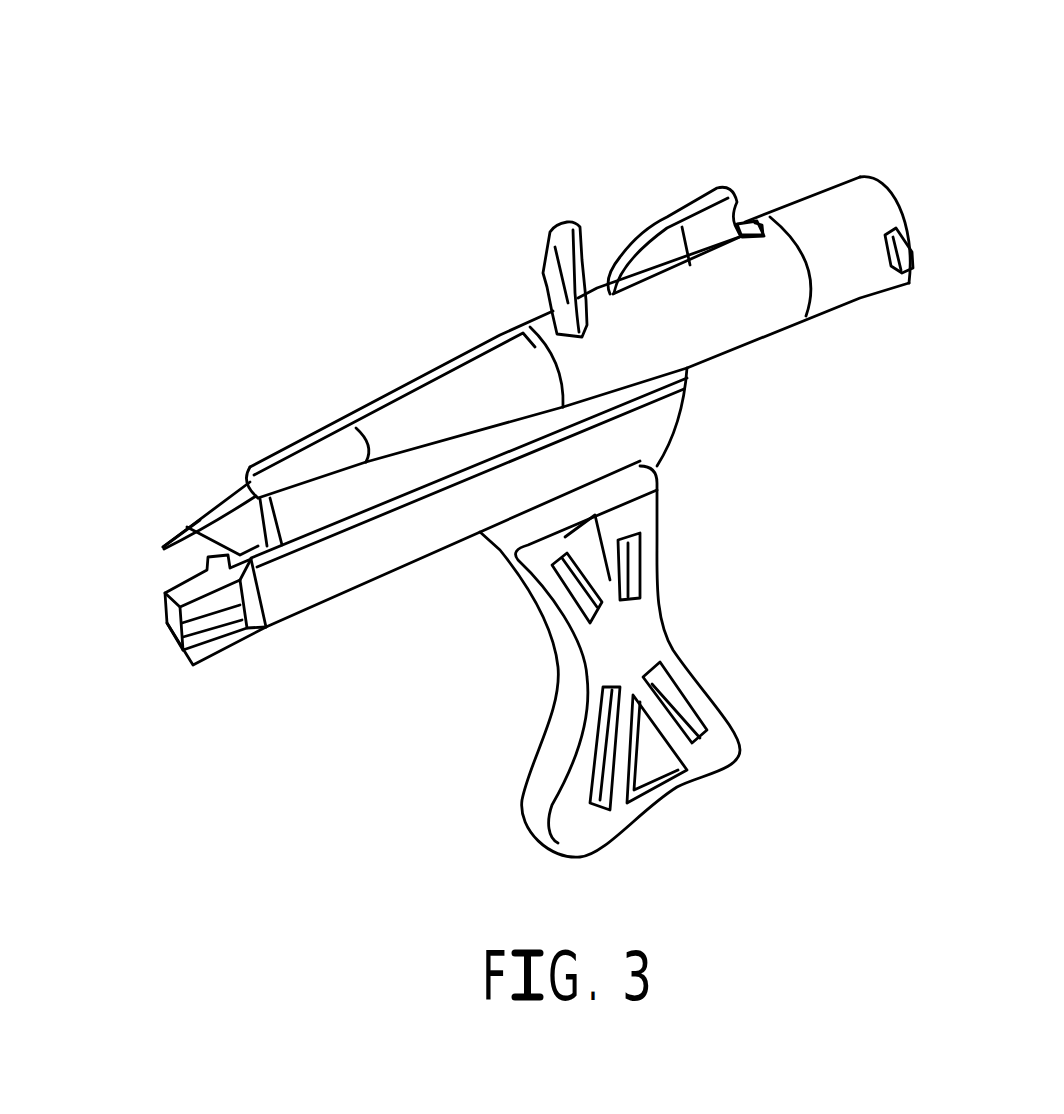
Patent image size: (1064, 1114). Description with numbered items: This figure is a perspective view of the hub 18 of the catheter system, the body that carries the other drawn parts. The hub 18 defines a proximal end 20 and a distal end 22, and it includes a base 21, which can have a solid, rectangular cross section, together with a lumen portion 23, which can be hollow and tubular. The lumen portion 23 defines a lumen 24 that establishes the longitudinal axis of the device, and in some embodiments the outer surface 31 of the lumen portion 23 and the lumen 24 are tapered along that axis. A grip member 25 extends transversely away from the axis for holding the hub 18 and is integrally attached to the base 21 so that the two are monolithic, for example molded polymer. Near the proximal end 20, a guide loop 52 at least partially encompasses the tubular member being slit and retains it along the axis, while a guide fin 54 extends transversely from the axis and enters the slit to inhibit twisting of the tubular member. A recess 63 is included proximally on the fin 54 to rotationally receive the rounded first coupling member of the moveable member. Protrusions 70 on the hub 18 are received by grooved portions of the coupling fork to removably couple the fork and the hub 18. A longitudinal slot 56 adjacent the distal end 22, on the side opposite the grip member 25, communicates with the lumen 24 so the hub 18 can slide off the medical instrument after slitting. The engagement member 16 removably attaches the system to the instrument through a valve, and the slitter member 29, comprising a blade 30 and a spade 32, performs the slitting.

The engagement member 16 is at (912, 248).
The hub 18 is at (613, 100).
The proximal end 20 is at (848, 200).
The base 21 is at (407, 473).
The distal end 22 is at (320, 581).
The lumen portion 23 is at (863, 275).
The lumen 24 is at (252, 487).
The grip member 25 is at (653, 655).
The slitter member 29 is at (155, 565).
The blade 30 is at (237, 560).
The outer surface 31 is at (450, 382).
The spade 32 is at (187, 525).
The guide loop 52 is at (550, 230).
The guide fin 54 is at (650, 232).
The longitudinal slot 56 is at (318, 446).
The recess 63 is at (760, 218).
The protrusions 70 is at (173, 633).